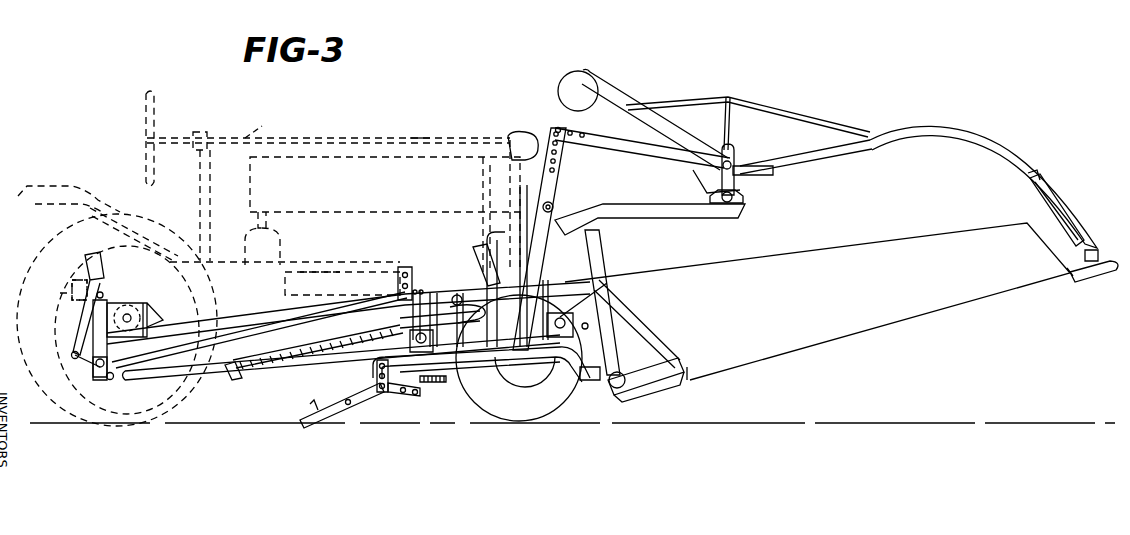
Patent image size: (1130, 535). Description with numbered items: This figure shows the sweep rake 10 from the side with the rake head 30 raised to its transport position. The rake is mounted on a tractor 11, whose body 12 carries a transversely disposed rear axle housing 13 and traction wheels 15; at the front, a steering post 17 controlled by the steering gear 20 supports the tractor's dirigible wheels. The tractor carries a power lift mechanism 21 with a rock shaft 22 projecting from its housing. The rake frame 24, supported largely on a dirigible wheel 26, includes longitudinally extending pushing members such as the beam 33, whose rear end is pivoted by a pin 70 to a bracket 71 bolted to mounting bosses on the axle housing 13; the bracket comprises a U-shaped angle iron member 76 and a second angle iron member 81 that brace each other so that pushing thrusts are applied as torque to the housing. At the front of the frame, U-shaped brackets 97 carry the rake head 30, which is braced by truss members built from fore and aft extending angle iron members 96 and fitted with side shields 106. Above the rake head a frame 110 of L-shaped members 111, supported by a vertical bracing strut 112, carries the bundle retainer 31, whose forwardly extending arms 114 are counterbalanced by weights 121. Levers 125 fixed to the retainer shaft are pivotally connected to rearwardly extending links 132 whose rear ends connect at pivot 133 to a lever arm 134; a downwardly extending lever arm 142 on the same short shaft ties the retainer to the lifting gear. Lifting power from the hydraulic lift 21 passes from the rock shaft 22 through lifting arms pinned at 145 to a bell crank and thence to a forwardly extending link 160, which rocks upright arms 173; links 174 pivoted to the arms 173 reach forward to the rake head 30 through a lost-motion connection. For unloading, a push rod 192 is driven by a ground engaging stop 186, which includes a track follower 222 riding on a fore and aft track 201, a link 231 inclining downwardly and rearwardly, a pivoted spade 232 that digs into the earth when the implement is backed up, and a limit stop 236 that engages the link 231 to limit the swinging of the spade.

The sweep rake 10 is at (947, 368).
The tractor 11 is at (426, 132).
The body 12 is at (320, 270).
The rear axle housing 13 is at (147, 292).
The traction wheels 15 is at (155, 222).
The steering post 17 is at (562, 176).
The steering gear 20 is at (262, 126).
The power lift mechanism 21 is at (60, 301).
The rock shaft 22 is at (87, 267).
The frame 24 is at (274, 392).
The dirigible wheel 26 is at (532, 418).
The rake head 30 is at (664, 402).
The bundle retainer 31 is at (958, 126).
The beam 33 is at (192, 386).
The pin 70 is at (113, 380).
The bracket 71 is at (85, 383).
The U-shaped angle iron member 76 is at (98, 333).
The second angle iron member 81 is at (150, 330).
The fore and aft extending angle iron member 96 is at (645, 385).
The bracket 97 is at (574, 376).
The side shield 106 is at (905, 250).
The frame 110 is at (739, 224).
The L-shaped angle iron member 111 is at (672, 208).
The vertical bracing strut 112 is at (572, 260).
The arm 114 is at (862, 142).
The counterbalance weight 121 is at (570, 88).
The lever 125 is at (730, 156).
The link 132 is at (625, 147).
The pivotal connection 133 is at (560, 128).
The lever arm 134 is at (548, 200).
The lever arm 142 is at (533, 238).
The pin 145 is at (140, 292).
The link 160 is at (286, 296).
The upright arm 173 is at (400, 292).
The link 174 is at (470, 260).
The ground engaging stop 186 is at (342, 418).
The push rod 192 is at (468, 382).
The track 201 is at (483, 372).
The track follower 222 is at (396, 404).
The link 231 is at (366, 398).
The spade 232 is at (310, 426).
The limit stop 236 is at (358, 385).